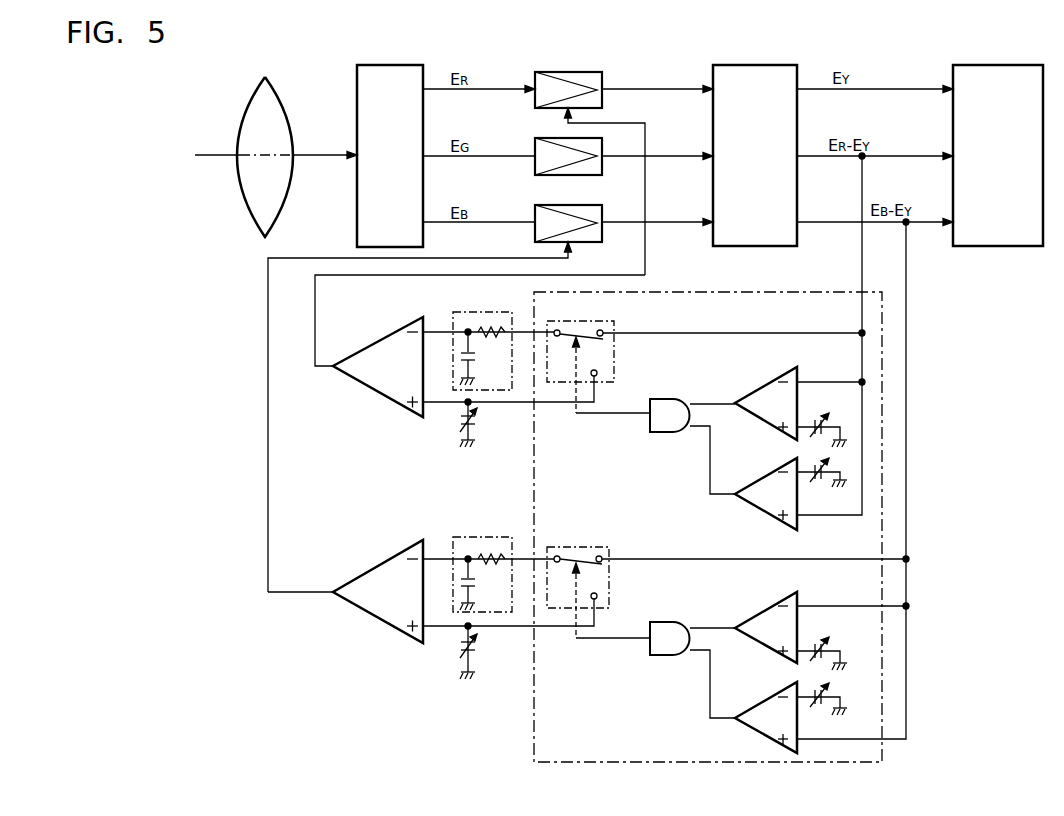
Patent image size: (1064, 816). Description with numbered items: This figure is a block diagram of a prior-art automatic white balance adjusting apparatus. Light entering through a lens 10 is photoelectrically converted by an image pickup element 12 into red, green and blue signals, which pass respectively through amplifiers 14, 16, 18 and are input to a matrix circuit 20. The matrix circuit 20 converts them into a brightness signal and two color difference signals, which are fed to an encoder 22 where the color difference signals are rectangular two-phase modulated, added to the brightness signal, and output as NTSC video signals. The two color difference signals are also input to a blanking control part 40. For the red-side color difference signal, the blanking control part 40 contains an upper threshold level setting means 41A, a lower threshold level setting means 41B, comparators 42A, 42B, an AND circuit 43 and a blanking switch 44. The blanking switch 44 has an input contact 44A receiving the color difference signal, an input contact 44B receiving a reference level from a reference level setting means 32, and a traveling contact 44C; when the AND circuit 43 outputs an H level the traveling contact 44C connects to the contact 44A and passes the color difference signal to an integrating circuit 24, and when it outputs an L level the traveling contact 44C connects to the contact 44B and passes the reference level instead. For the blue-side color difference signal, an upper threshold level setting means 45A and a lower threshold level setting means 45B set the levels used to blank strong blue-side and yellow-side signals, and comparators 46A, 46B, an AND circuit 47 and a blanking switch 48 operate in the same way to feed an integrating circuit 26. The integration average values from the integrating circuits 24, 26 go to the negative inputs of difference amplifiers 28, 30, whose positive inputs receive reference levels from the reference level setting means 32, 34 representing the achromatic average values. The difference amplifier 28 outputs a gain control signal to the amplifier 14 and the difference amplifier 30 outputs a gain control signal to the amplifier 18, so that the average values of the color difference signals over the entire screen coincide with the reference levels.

The lens 10 is at (278, 88).
The image pickup element 12 is at (390, 65).
The amplifier 14 is at (569, 72).
The amplifier 16 is at (540, 138).
The amplifier 18 is at (540, 205).
The matrix circuit 20 is at (757, 65).
The encoder 22 is at (996, 65).
The integrating circuit 24 is at (462, 312).
The integrating circuit 26 is at (468, 537).
The difference amplifier 28 is at (375, 340).
The difference amplifier 30 is at (384, 562).
The reference level setting means 32 is at (478, 412).
The reference level setting means 34 is at (478, 637).
The blanking control part 40 is at (886, 436).
The upper threshold level setting means 41A is at (818, 418).
The lower threshold level setting means 41B is at (818, 470).
The comparator 42A is at (765, 384).
The comparator 42B is at (758, 478).
The AND circuit 43 is at (688, 396).
The blanking switch 44 is at (614, 342).
The input contact 44A is at (605, 330).
The input contact 44B is at (601, 373).
The traveling contact 44C is at (574, 342).
The upper threshold level setting means 45A is at (822, 645).
The lower threshold level setting means 45B is at (818, 701).
The comparator 46A is at (760, 612).
The comparator 46B is at (758, 702).
The AND circuit 47 is at (670, 621).
The blanking switch 48 is at (590, 547).